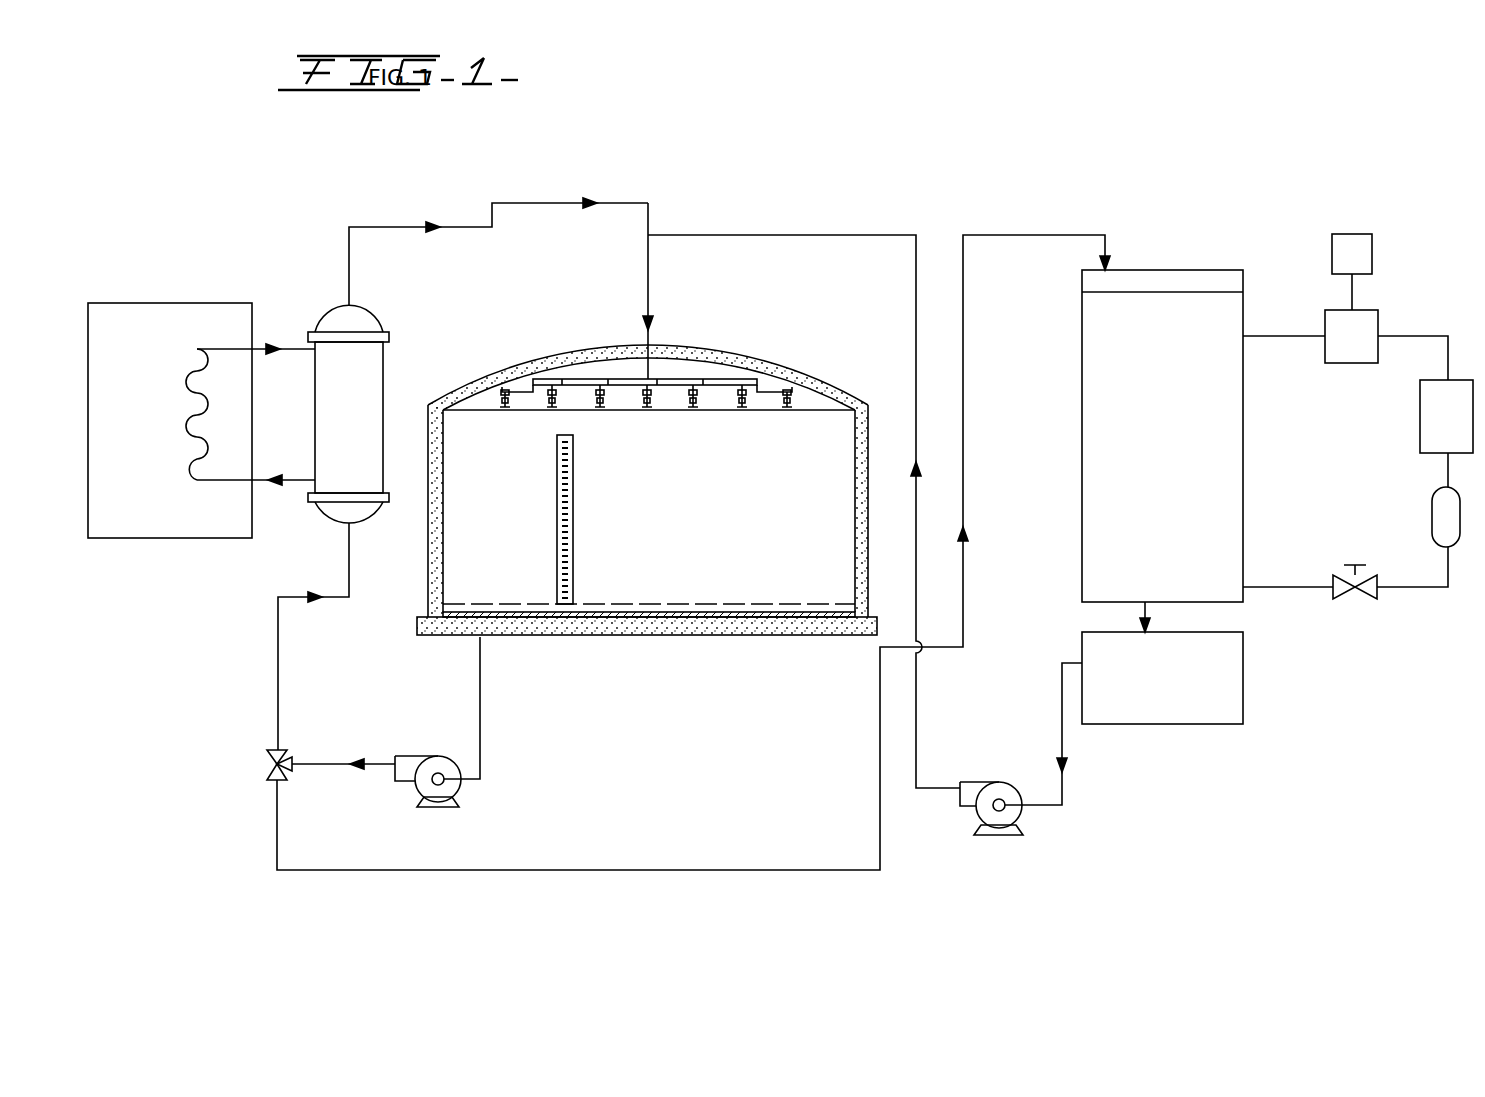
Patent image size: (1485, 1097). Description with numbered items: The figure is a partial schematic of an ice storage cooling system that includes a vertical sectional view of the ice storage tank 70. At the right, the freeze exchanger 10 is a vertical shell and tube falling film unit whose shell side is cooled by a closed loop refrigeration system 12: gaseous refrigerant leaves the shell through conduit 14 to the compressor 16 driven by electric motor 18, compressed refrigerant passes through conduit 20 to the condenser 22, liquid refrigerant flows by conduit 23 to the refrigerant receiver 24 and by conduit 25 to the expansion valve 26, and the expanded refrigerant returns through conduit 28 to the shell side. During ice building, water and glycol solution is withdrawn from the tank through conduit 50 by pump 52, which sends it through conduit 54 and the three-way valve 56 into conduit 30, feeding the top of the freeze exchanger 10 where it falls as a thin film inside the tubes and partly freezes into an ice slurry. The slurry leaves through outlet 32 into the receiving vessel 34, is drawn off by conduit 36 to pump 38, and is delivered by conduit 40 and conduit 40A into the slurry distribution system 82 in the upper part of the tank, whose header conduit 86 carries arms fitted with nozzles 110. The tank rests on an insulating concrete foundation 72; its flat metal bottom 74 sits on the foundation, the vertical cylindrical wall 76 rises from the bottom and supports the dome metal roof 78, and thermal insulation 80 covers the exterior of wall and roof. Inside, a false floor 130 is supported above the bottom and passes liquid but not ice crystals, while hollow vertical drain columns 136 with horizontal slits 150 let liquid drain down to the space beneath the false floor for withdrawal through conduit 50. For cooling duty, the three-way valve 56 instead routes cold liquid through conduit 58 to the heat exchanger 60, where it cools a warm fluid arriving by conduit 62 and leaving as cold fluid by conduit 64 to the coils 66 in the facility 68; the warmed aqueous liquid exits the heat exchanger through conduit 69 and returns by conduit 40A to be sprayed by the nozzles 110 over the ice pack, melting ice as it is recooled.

The freeze exchanger 10 is at (1175, 256).
The closed loop refrigeration system 12 is at (1401, 324).
The conduit 14 is at (1284, 318).
The compressor 16 is at (1348, 355).
The electric motor 18 is at (1350, 243).
The conduit 20 is at (1397, 337).
The condenser 22 is at (1428, 421).
The conduit 23 is at (1443, 470).
The refrigerant receiver 24 is at (1430, 529).
The conduit 25 is at (1407, 588).
The expansion valve 26 is at (1345, 592).
The conduit 28 is at (1283, 588).
The conduit 30 is at (497, 870).
The outlet 32 is at (1150, 612).
The receiving vessel 34 is at (1208, 710).
The conduit 36 is at (1067, 752).
The pump 38 is at (972, 800).
The conduit 40 is at (828, 235).
The conduit 40A is at (652, 290).
The conduit 50 is at (481, 722).
The pump 52 is at (413, 763).
The conduit 54 is at (325, 762).
The three-way valve 56 is at (268, 767).
The conduit 58 is at (277, 622).
The heat exchanger 60 is at (396, 390).
The conduit 62 is at (262, 347).
The conduit 64 is at (296, 483).
The coil 66 is at (192, 423).
The facility 68 is at (170, 527).
The conduit 69 is at (398, 227).
The ice storage tank 70 is at (638, 491).
The insulating concrete foundation 72 is at (746, 633).
The tank bottom 74 is at (667, 620).
The wall 76 is at (435, 543).
The dome metal roof 78 is at (500, 383).
The thermal insulation 80 is at (557, 357).
The slurry distribution system 82 is at (660, 368).
The header conduit 86 is at (625, 386).
The nozzle 110 is at (647, 407).
The false floor 130 is at (687, 602).
The drain column 136 is at (582, 542).
The horizontal slits 150 is at (558, 567).